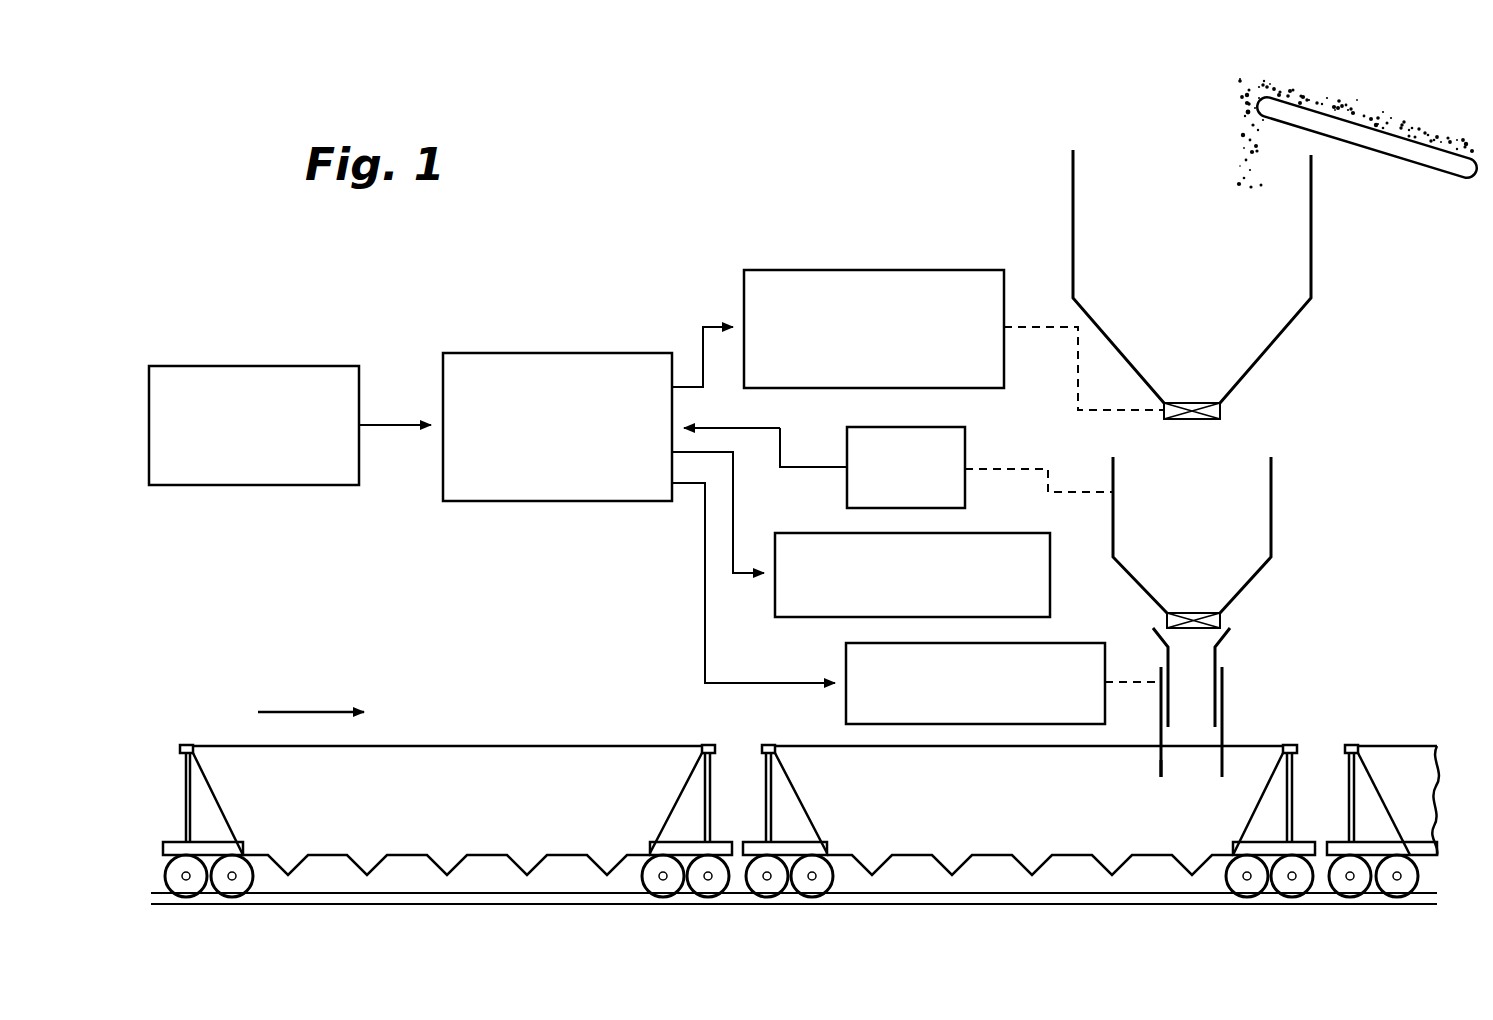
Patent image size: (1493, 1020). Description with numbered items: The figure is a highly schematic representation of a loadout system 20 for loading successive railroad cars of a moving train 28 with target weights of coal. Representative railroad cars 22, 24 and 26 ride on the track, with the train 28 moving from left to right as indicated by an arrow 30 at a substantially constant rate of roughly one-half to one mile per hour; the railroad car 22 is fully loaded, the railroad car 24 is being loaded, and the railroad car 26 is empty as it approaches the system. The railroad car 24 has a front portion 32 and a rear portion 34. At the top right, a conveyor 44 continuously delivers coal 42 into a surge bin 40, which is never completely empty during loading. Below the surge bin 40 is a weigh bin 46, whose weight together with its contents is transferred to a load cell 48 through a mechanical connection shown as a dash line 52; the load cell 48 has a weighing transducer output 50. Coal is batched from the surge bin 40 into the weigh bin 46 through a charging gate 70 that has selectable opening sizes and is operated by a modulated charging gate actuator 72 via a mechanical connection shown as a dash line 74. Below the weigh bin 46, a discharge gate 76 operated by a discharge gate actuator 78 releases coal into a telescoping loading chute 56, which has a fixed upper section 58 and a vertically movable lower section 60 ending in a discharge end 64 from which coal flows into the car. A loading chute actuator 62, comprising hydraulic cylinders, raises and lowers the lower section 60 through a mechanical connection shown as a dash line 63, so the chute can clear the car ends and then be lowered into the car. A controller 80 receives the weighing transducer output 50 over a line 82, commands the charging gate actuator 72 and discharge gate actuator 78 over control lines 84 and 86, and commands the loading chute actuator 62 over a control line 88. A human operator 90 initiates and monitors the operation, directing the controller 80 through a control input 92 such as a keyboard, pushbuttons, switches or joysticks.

The loadout system 20 is at (673, 178).
The railroad car 22 is at (1392, 743).
The railroad car 24 is at (783, 742).
The railroad car 26 is at (542, 743).
The moving train 28 is at (422, 672).
The arrow 30 is at (317, 712).
The front portion 32 is at (1236, 718).
The rear portion 34 is at (750, 733).
The surge bin 40 is at (1312, 242).
The bulk material 42 is at (1318, 95).
The conveyor 44 is at (1407, 168).
The weigh bin 46 is at (1271, 507).
The load cell 48 is at (944, 427).
The weighing transducer output 50 is at (808, 467).
The dash line 52 is at (1052, 482).
The telescoping loading chute 56 is at (1258, 627).
The fixed upper section 58 is at (1215, 658).
The vertically movable lower section 60 is at (1158, 730).
The loading chute actuator 62 is at (846, 709).
The dash line 63 is at (1138, 681).
The discharge end 64 is at (1160, 778).
The charging gate 70 is at (1222, 412).
The modulated charging gate actuator 72 is at (850, 270).
The dash line 74 is at (1037, 325).
The discharge gate 76 is at (1220, 615).
The discharge gate actuator 78 is at (807, 617).
The controller 80 is at (563, 353).
The line 82 is at (745, 428).
The control line 84 is at (703, 334).
The control line 86 is at (733, 544).
The control line 88 is at (705, 629).
The human operator 90 is at (255, 366).
The control input 92 is at (390, 424).